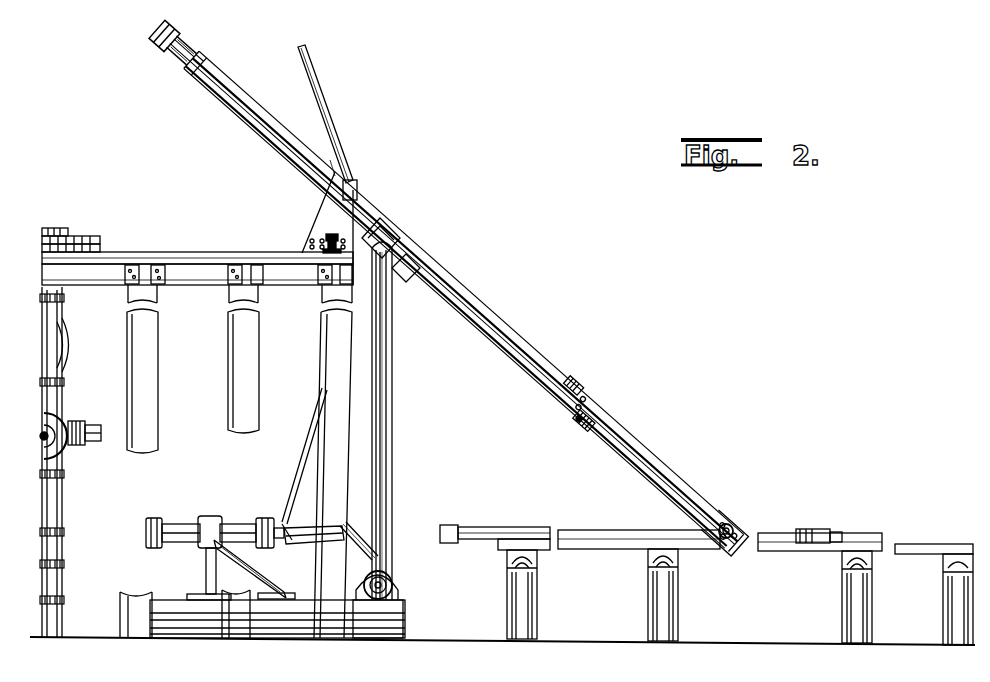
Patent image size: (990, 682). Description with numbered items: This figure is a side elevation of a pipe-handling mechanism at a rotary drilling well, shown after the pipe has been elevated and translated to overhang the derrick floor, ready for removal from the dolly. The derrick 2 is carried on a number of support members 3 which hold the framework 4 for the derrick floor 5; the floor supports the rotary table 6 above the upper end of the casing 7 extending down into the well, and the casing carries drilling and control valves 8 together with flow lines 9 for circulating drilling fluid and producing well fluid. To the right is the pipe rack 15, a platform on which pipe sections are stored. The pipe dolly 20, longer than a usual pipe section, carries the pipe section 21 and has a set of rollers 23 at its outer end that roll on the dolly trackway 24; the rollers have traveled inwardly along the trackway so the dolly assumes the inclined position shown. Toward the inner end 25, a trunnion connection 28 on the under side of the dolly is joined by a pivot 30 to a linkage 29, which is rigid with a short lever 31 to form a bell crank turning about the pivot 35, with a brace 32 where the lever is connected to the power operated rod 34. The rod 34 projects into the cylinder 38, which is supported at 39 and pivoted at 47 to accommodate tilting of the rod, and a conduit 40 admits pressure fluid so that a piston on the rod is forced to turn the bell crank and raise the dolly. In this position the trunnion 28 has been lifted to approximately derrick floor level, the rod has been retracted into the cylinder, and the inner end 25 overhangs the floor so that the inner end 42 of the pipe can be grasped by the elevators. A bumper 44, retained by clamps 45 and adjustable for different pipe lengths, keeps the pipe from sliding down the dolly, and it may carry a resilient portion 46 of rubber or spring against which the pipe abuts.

The derrick 2 is at (330, 94).
The support members 3 is at (128, 348).
The framework 4 is at (190, 272).
The derrick floor 5 is at (136, 266).
The rotary table 6 is at (95, 246).
The casing 7 is at (40, 414).
The drilling and control valves 8 is at (70, 420).
The flow lines 9 is at (90, 446).
The pipe rack 15 is at (780, 550).
The pipe dolly 20 is at (222, 94).
The pipe section 21 is at (183, 52).
The rollers 23 is at (732, 528).
The dolly trackway 24 is at (848, 542).
The inner end 25 is at (194, 80).
The trunnion connection 28 is at (386, 236).
The linkage 29 is at (392, 393).
The pivot 30 is at (396, 250).
The short lever 31 is at (310, 550).
The brace 32 is at (346, 522).
The power operated rod 34 is at (284, 526).
The pivot 35 is at (394, 586).
The cylinder 38 is at (240, 522).
The cylinder support 39 is at (204, 572).
The conduit 40 is at (306, 428).
The inner end of the pipe 42 is at (164, 40).
The bumper 44 is at (584, 400).
The clamps 45 is at (562, 415).
The resilient portion 46 is at (572, 390).
The cylinder pivot 47 is at (200, 518).